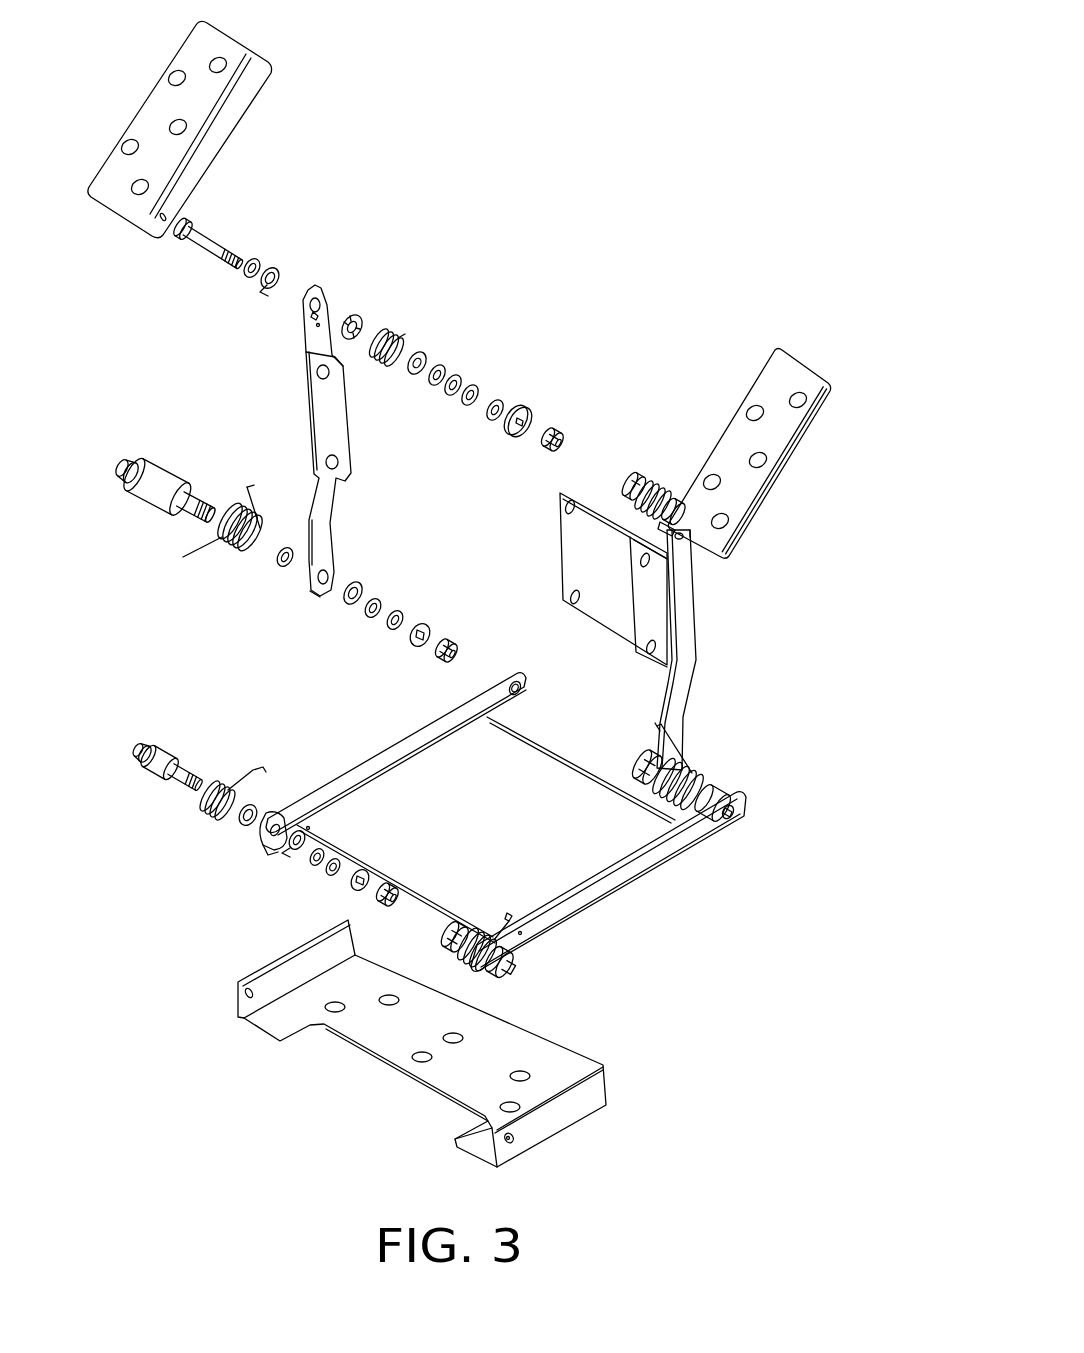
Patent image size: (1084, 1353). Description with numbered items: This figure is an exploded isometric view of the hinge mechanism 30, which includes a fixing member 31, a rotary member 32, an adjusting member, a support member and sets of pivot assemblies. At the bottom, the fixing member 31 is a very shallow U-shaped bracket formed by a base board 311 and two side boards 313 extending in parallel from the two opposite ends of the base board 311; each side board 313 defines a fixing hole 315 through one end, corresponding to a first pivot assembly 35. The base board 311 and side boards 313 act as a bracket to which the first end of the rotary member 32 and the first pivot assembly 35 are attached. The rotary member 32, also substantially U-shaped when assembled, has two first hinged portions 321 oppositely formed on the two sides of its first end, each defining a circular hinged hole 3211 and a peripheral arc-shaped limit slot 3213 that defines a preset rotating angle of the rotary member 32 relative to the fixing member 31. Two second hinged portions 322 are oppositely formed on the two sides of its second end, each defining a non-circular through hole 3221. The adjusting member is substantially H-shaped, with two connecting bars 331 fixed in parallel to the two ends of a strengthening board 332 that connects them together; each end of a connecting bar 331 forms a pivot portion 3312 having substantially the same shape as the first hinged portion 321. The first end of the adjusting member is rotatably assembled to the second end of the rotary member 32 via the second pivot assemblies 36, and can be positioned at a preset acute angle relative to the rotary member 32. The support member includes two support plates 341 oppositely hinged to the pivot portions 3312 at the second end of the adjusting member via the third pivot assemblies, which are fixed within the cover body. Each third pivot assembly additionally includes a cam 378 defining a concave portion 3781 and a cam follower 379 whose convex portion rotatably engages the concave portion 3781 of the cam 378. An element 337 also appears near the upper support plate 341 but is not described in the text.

The hinge mechanism 30 is at (678, 104).
The fixing member 31 is at (413, 1103).
The base board 311 is at (390, 1038).
The side board 313 is at (592, 1095).
The fixing hole 315 is at (515, 1140).
The rotary member 32 is at (630, 867).
The first hinged portion 321 is at (277, 850).
The circular hinged hole 3211 is at (278, 827).
The arc-shaped limit slot 3213 is at (260, 828).
The second hinged portion 322 is at (513, 677).
The non-circular through hole 3221 is at (525, 692).
The connecting bar 331 is at (322, 412).
The pivot portion 3312 is at (310, 587).
The strengthening board 332 is at (577, 550).
The spring bushing 337 is at (663, 487).
The support plate 341 is at (207, 97).
The first pivot assembly 35 is at (490, 970).
The second pivot assembly 36 is at (697, 767).
The cam 378 is at (349, 320).
The concave portion 3781 is at (362, 317).
The cam follower 379 is at (423, 351).